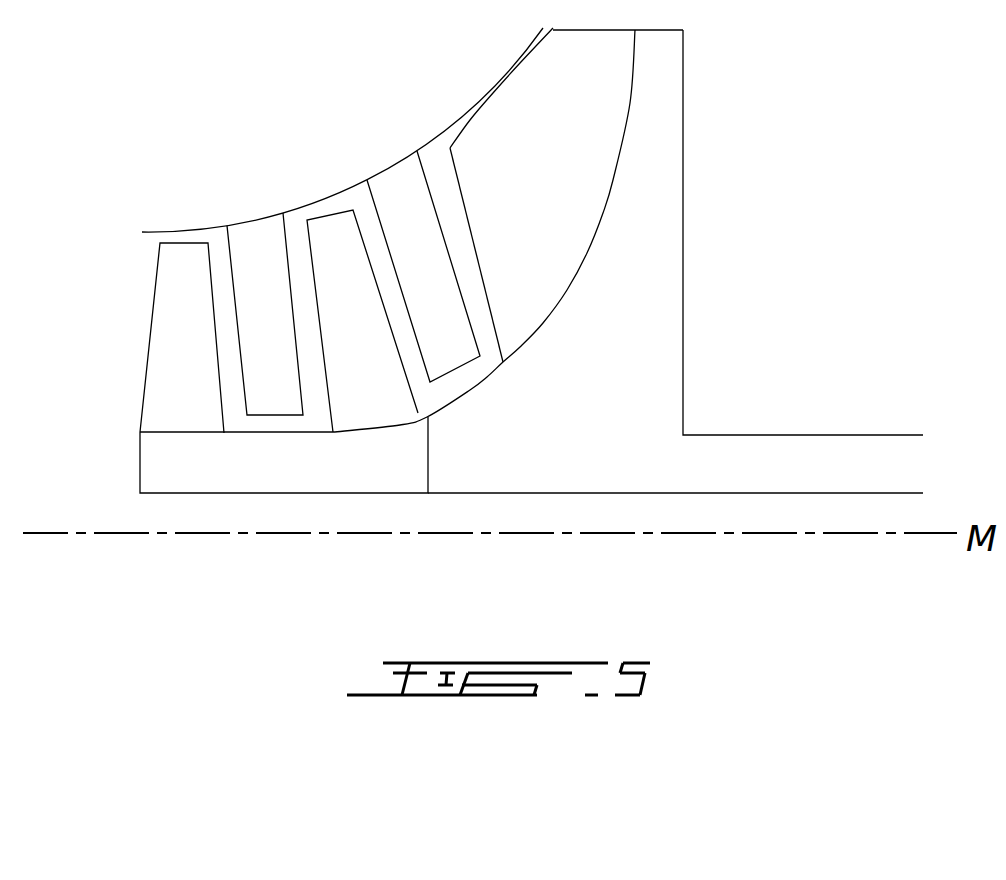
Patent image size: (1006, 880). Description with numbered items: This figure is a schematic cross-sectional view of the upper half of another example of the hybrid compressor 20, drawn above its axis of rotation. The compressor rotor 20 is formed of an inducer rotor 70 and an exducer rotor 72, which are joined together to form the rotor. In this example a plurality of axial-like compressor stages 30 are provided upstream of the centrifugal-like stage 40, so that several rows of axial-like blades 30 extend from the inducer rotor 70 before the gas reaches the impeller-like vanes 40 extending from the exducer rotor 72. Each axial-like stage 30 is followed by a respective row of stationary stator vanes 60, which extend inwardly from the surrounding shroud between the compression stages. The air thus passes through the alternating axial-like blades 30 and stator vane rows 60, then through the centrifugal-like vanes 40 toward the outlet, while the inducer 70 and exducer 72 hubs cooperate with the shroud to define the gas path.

The hybrid compressor 20 is at (330, 130).
The axial-like compressor blades 30 is at (201, 363).
The centrifugal-like compressor vanes 40 is at (574, 157).
The stator vanes 60 is at (283, 331).
The inducer rotor 70 is at (408, 473).
The exducer rotor 72 is at (613, 428).